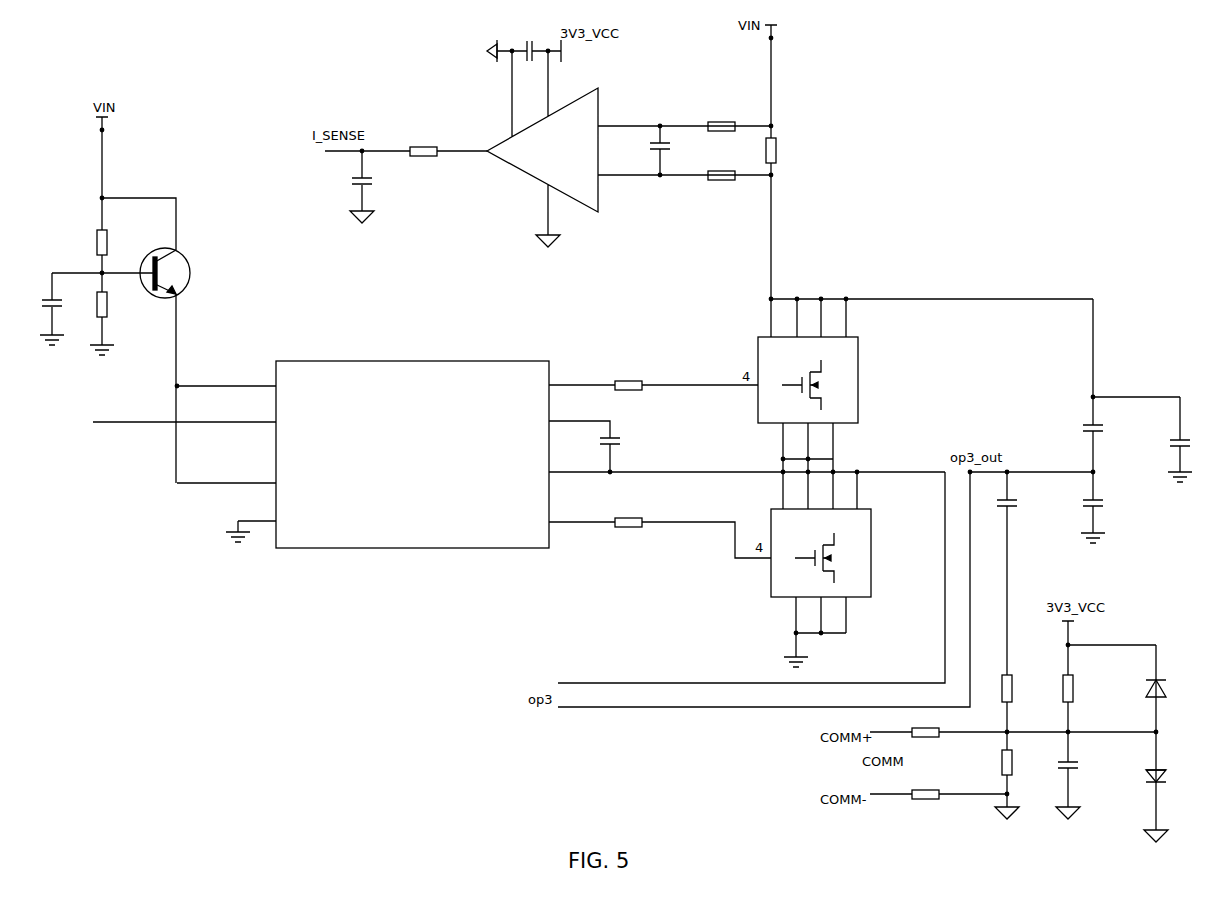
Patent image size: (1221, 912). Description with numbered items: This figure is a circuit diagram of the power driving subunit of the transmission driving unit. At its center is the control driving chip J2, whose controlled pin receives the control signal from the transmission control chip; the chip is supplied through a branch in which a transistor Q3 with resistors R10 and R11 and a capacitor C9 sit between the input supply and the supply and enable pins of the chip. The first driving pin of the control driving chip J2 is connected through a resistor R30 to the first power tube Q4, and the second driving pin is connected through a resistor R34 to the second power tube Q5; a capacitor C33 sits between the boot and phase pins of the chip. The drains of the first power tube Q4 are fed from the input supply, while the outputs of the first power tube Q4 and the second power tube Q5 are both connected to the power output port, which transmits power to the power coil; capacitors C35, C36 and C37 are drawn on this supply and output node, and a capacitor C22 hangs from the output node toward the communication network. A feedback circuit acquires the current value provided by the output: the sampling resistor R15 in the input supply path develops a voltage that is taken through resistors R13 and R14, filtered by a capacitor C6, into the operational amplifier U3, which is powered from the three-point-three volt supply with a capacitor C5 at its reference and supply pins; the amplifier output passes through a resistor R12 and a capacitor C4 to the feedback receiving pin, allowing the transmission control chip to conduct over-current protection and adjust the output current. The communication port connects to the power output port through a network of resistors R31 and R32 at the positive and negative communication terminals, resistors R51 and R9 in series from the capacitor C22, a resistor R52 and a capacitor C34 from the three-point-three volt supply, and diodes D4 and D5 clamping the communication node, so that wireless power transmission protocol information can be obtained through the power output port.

The resistor R10 is at (118, 239).
The resistor R11 is at (118, 301).
The capacitor C9 is at (71, 309).
The transistor Q3 is at (154, 364).
The resistor R12 is at (428, 143).
The capacitor C4 is at (375, 187).
The operational amplifier U3 is at (617, 149).
The capacitor C5 is at (524, 34).
The capacitor C6 is at (669, 151).
The resistor R13 is at (726, 118).
The resistor R14 is at (726, 168).
The sampling resistor R15 is at (787, 149).
The control driving chip J2 is at (329, 435).
The resistor R30 is at (628, 378).
The capacitor C33 is at (623, 439).
The resistor R34 is at (628, 514).
The first power tube Q4 is at (821, 394).
The second power tube Q5 is at (833, 569).
The capacitor C35 is at (1108, 448).
The capacitor C36 is at (1107, 507).
The capacitor C37 is at (1192, 439).
The capacitor C22 is at (1020, 572).
The resistor R51 is at (1024, 708).
The resistor R9 is at (1016, 781).
The resistor R52 is at (1082, 714).
The capacitor C34 is at (1082, 782).
The diode D4 is at (1166, 688).
The diode D5 is at (1165, 787).
The resistor R31 is at (925, 725).
The resistor R32 is at (925, 787).